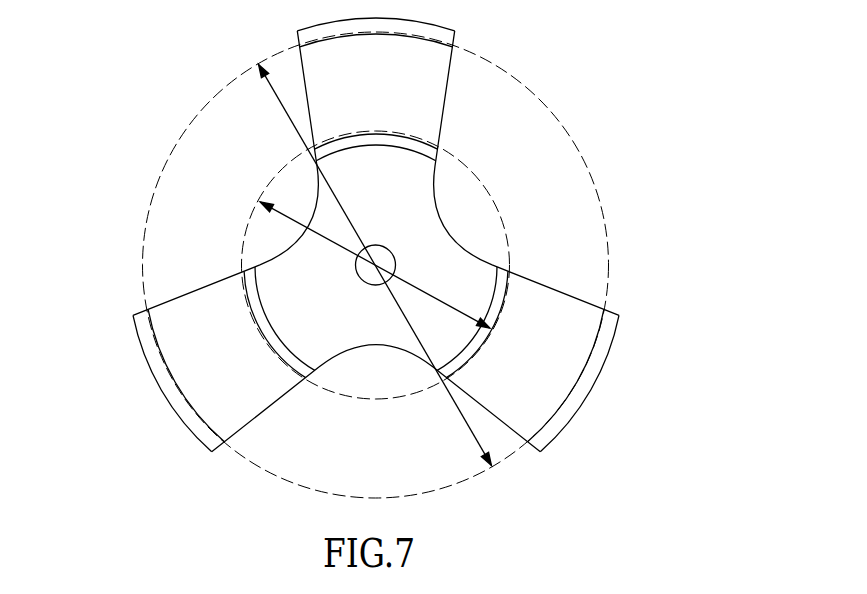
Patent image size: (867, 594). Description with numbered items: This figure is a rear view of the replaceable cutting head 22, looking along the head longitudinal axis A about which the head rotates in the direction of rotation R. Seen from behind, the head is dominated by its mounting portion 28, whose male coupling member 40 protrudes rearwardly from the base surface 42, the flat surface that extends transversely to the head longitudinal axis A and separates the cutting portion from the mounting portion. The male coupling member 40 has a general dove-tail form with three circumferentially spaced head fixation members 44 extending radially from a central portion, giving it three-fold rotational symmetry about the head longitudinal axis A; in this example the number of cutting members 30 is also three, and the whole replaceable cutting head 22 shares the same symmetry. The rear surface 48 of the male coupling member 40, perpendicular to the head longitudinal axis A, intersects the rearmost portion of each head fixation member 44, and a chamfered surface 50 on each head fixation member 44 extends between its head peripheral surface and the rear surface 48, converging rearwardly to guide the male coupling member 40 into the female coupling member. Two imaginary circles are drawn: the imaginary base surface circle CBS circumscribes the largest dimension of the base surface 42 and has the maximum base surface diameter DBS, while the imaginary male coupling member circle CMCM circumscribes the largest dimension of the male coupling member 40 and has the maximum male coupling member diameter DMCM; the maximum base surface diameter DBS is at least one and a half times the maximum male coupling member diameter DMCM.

The replaceable cutting head 22 is at (415, 249).
The mounting portion 28 is at (168, 92).
The cutting member 30 is at (145, 415).
The male coupling member 40 is at (270, 243).
The base surface 42 is at (470, 265).
The head fixation member 44 is at (444, 175).
The rear surface 48 is at (416, 200).
The chamfered surface 50 is at (426, 145).
The head longitudinal axis A is at (382, 263).
The direction of rotation R is at (299, 446).
The maximum base surface diameter DBS is at (280, 107).
The imaginary base surface circle CBS is at (588, 173).
The maximum male coupling member diameter DMCM is at (278, 222).
The imaginary male coupling member circle CMCM is at (510, 248).